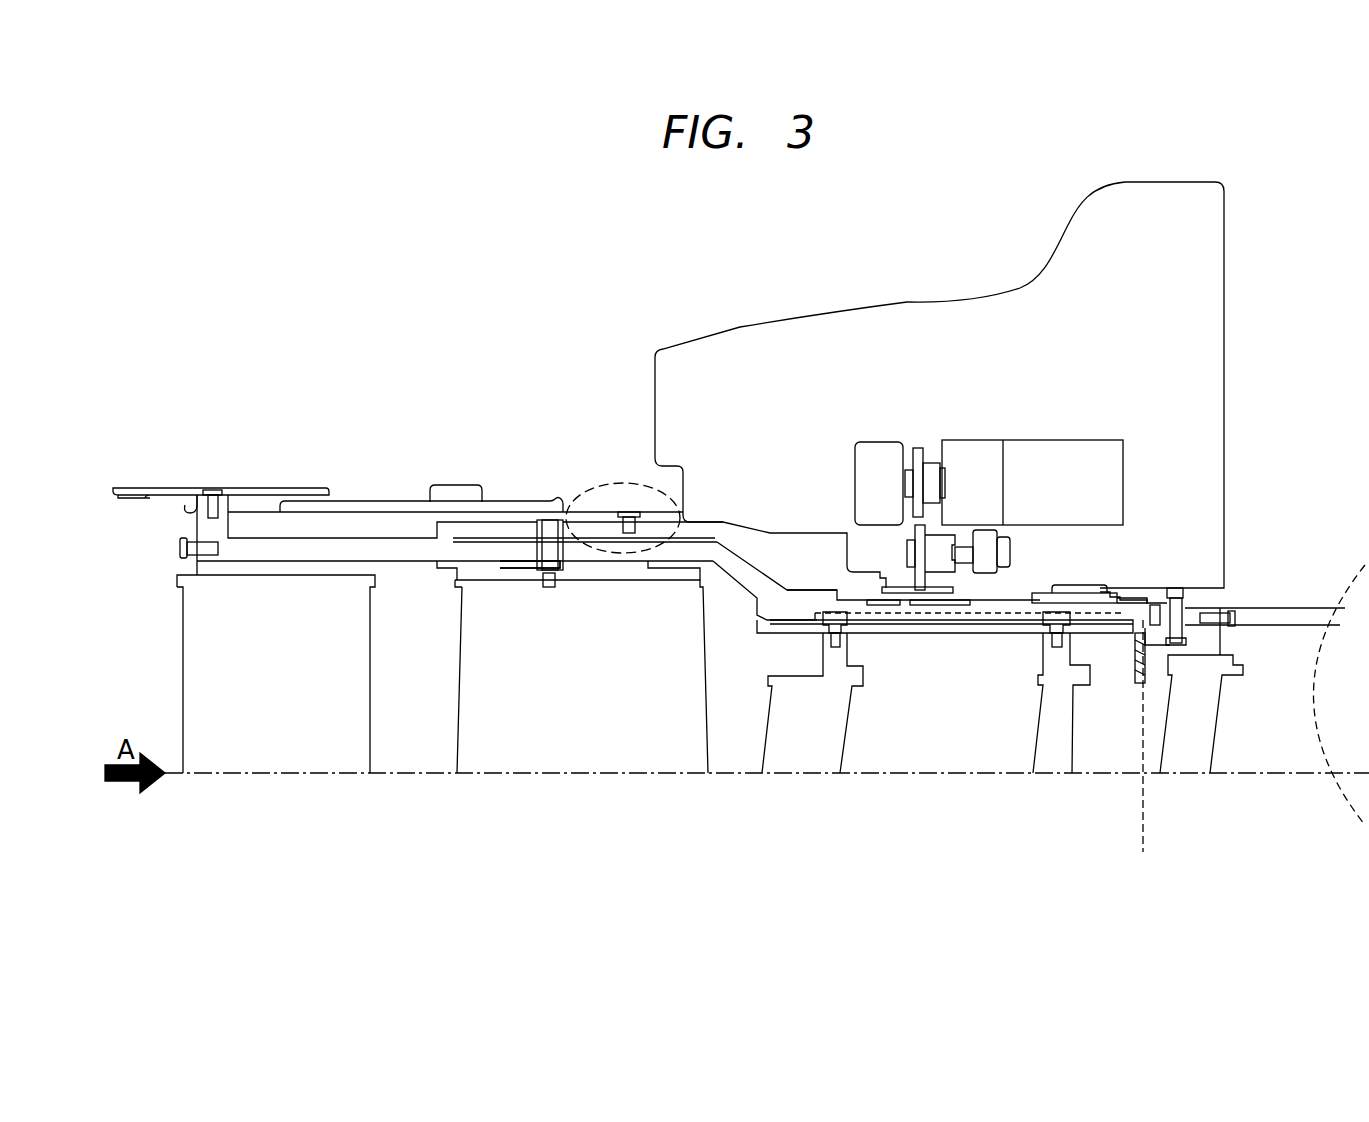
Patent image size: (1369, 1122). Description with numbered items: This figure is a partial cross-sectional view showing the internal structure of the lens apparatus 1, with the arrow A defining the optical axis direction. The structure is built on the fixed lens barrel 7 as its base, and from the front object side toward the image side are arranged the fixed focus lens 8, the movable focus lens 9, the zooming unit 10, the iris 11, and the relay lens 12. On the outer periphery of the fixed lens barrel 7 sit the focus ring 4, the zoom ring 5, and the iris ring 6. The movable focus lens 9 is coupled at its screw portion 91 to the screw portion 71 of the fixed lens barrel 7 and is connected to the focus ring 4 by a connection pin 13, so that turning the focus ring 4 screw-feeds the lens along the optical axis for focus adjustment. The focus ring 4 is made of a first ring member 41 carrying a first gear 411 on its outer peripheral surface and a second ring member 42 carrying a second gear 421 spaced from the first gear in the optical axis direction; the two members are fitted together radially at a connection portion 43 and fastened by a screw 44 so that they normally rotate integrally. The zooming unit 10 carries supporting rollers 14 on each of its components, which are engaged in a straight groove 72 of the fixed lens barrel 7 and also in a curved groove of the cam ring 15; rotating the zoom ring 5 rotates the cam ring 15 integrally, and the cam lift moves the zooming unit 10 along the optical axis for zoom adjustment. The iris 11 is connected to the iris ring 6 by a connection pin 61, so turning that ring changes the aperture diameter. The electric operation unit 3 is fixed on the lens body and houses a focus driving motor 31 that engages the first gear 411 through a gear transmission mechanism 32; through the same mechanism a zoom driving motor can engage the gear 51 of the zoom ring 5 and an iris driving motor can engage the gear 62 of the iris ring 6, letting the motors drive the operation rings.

The lens apparatus 1 is at (382, 312).
The electric operation unit 3 is at (1210, 355).
The focus ring 4 is at (610, 493).
The zoom ring 5 is at (1173, 527).
The iris ring 6 is at (1245, 565).
The fixed lens barrel 7 is at (765, 612).
The fixed focus lens 8 is at (272, 748).
The movable focus lens 9 is at (575, 748).
The zooming unit 10 is at (1083, 799).
The iris 11 is at (1137, 662).
The relay lens 12 is at (1193, 768).
The connection pin 13 is at (548, 552).
The supporting rollers 14 is at (832, 641).
The cam ring 15 is at (950, 622).
The focus driving motor 31 is at (1015, 401).
The gear transmission mechanism 32 is at (935, 555).
The first ring member 41 is at (745, 540).
The second ring member 42 is at (345, 500).
The connection portion 43 is at (597, 486).
The screw 44 is at (624, 548).
The gear 51 is at (1080, 593).
The connection pin 61 is at (1215, 622).
The gear 62 is at (1175, 590).
The screw portion 71 is at (520, 570).
The straight groove 72 is at (905, 614).
The screw portion 91 is at (530, 564).
The first gear 411 is at (895, 585).
The second gear 421 is at (455, 488).